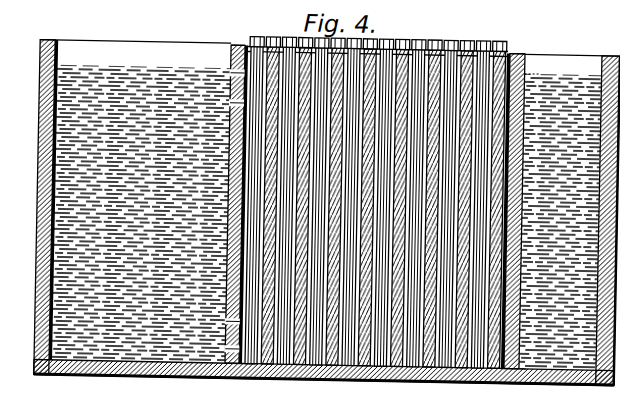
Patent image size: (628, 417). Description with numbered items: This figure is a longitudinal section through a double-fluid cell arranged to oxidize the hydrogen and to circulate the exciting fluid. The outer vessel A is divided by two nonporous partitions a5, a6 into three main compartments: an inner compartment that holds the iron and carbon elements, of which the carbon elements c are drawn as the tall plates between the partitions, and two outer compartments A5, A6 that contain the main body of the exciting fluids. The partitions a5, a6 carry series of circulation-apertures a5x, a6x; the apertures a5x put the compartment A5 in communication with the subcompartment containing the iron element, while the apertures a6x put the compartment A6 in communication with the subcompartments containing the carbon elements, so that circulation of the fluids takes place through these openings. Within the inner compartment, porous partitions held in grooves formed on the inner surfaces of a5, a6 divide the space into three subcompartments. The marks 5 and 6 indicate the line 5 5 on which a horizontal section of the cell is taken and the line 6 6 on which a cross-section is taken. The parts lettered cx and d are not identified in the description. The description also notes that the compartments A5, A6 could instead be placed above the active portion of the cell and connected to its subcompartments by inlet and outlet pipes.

The outer vessel A is at (30, 47).
The outer compartment A5 is at (576, 353).
The outer compartment A6 is at (140, 214).
The carbon element c is at (259, 31).
The cell wall cx is at (498, 45).
The cell partition wall d is at (226, 39).
The section line 6 6 is at (454, 378).
The section line 5 5 is at (151, 88).
The nonporous partition a5 is at (521, 363).
The circulation-apertures a5x is at (515, 59).
The nonporous partition a6 is at (215, 202).
The circulation-apertures a6x is at (222, 104).